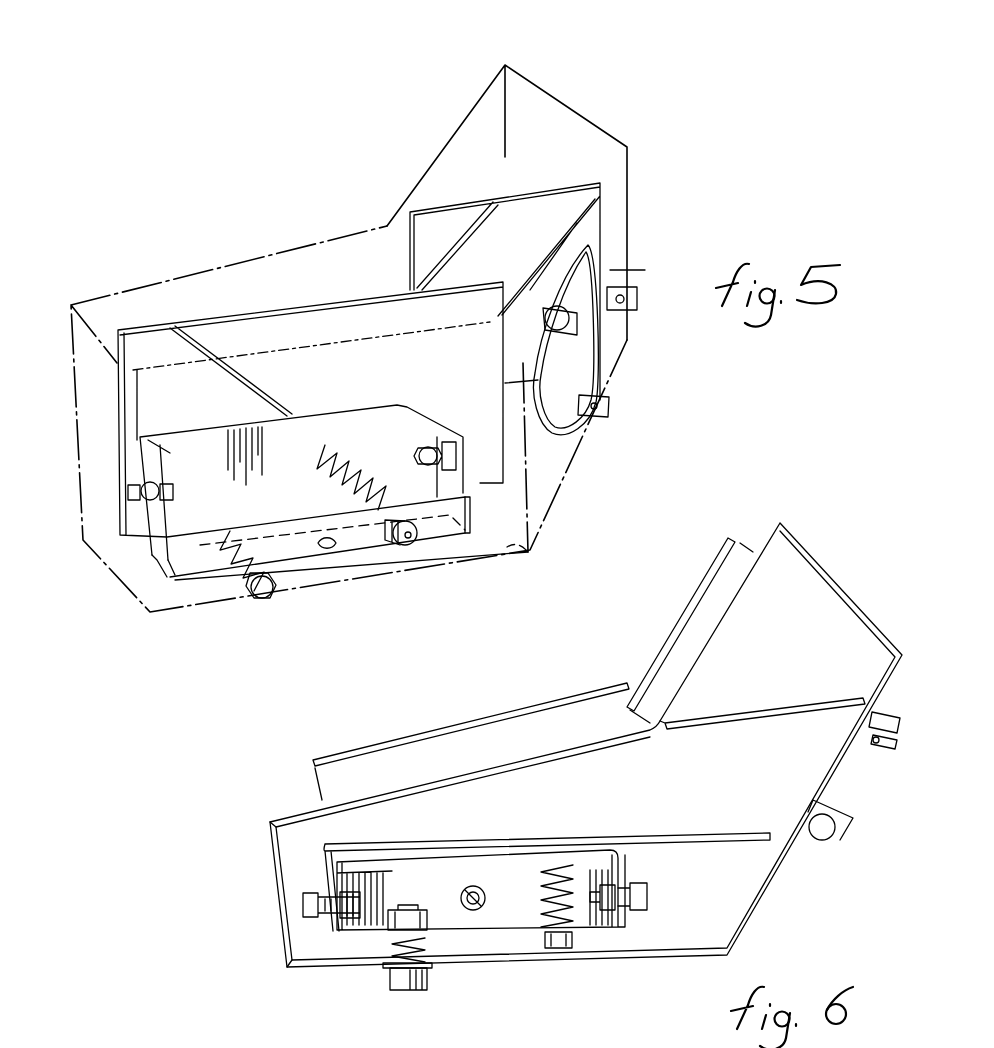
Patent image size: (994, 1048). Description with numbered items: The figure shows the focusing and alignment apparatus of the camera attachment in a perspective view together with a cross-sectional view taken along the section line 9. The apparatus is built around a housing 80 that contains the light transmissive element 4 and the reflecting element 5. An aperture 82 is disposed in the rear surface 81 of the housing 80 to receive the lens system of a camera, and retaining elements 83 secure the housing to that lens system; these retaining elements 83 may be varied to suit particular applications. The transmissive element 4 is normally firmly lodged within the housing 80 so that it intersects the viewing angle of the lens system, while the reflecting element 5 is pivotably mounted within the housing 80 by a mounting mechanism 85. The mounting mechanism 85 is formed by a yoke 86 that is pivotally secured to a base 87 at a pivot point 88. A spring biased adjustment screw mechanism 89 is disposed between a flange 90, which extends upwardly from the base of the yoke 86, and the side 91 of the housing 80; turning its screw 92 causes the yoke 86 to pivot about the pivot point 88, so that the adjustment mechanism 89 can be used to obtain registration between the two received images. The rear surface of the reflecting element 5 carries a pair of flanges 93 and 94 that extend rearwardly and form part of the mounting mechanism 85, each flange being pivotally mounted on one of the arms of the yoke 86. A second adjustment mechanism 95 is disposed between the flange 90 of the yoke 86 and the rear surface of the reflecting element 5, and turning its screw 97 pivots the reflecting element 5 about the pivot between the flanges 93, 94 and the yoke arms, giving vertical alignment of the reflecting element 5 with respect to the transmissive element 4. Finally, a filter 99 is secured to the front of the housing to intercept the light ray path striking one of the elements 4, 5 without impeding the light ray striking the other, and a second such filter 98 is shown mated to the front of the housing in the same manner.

In FIG. 5, the transmissive element 4 is at (602, 225).
In FIG. 6, the transmissive element 4 is at (743, 713).
In FIG. 5, the reflecting element 5 is at (150, 326).
In FIG. 6, the reflecting element 5 is at (573, 840).
In FIG. 5, the section line 9 is at (40, 506).
In FIG. 5, the housing 80 is at (628, 165).
In FIG. 5, the rear surface 81 is at (618, 253).
In FIG. 5, the aperture 82 is at (612, 270).
In FIG. 5, the retaining elements 83 is at (637, 312).
In FIG. 6, the retaining elements 83 is at (897, 742).
In FIG. 5, the mounting mechanism 85 is at (445, 428).
In FIG. 6, the mounting mechanism 85 is at (618, 896).
In FIG. 5, the yoke 86 is at (470, 490).
In FIG. 6, the yoke 86 is at (503, 927).
In FIG. 5, the base 87 is at (528, 552).
In FIG. 6, the base 87 is at (450, 880).
In FIG. 5, the pivot point 88 is at (327, 543).
In FIG. 6, the pivot point 88 is at (477, 890).
In FIG. 6, the spring biased adjustment screw mechanism 89 is at (427, 953).
In FIG. 5, the flange 90 is at (203, 572).
In FIG. 6, the side 91 is at (315, 970).
In FIG. 5, the screw 92 is at (263, 598).
In FIG. 6, the screw 92 is at (393, 990).
In FIG. 5, the flange 93 is at (152, 470).
In FIG. 6, the flange 93 is at (331, 905).
In FIG. 5, the flange 94 is at (380, 403).
In FIG. 6, the second adjustment mechanism 95 is at (582, 907).
In FIG. 5, the screw 97 is at (403, 548).
In FIG. 6, the screw 97 is at (573, 960).
In FIG. 6, the strip 98 is at (402, 737).
In FIG. 6, the filter 99 is at (687, 607).